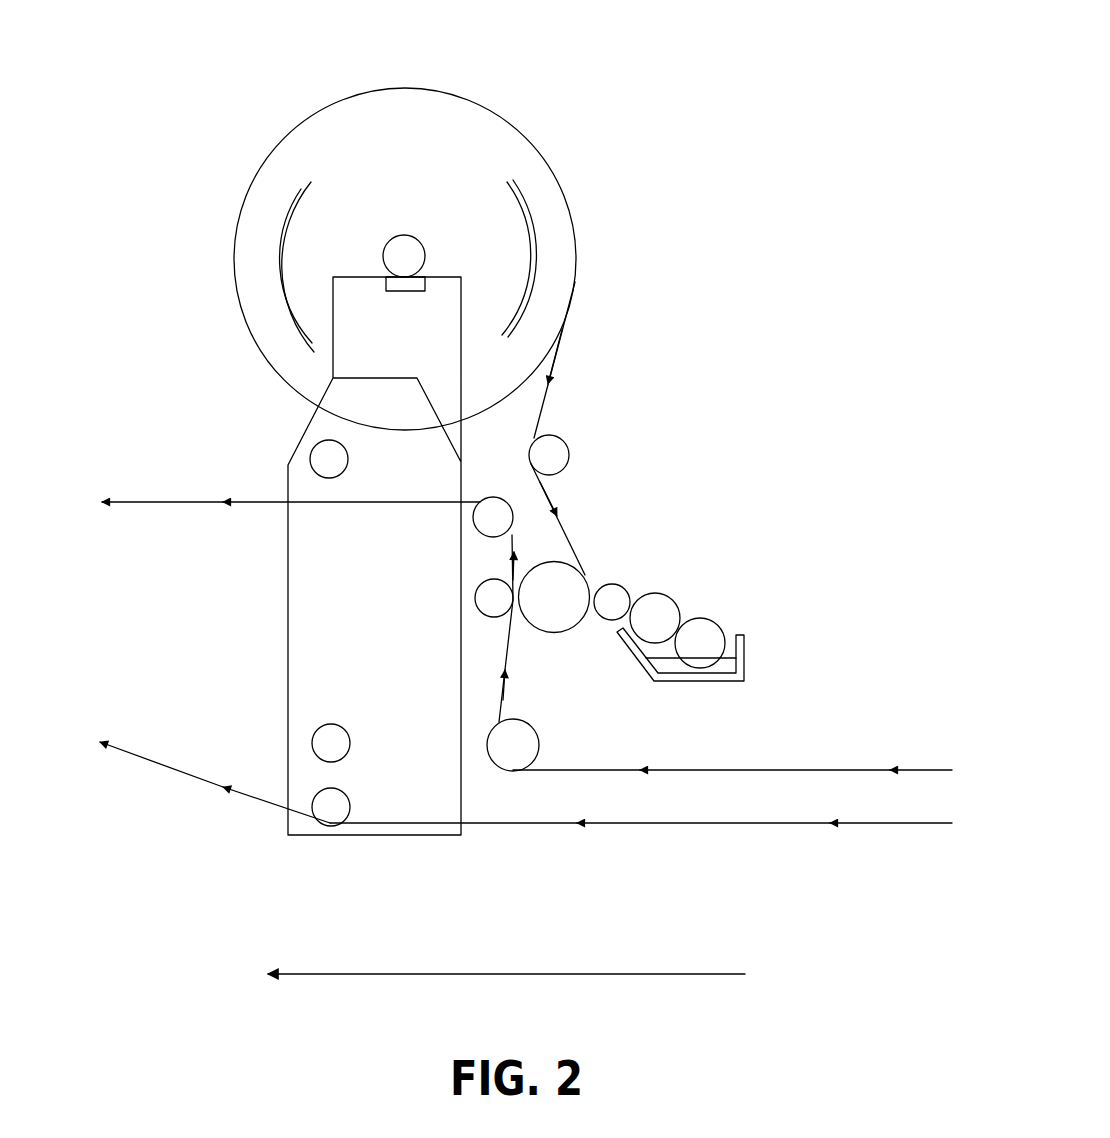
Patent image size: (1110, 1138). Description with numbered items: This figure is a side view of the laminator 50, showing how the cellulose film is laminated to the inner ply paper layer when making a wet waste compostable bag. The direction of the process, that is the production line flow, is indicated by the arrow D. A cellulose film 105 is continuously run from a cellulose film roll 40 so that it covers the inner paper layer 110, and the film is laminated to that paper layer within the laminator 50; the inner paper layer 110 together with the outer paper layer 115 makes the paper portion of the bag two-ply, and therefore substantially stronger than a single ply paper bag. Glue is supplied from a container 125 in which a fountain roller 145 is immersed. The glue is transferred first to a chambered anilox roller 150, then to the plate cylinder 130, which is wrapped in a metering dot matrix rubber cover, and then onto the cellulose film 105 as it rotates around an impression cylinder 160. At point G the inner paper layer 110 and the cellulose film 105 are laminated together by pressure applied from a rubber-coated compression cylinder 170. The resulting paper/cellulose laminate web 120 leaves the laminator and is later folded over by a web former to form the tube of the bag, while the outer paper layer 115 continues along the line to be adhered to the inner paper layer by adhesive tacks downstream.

The cellulose film roll 40 is at (383, 86).
The laminator 50 is at (392, 837).
The cellulose film 105 is at (545, 398).
The inner paper layer 110 is at (607, 769).
The outer paper layer 115 is at (757, 822).
The paper/cellulose laminate web 120 is at (178, 500).
The container 125 is at (745, 663).
The plate cylinder 130 is at (615, 583).
The fountain roller 145 is at (703, 618).
The chambered anilox roller 150 is at (662, 595).
The impression cylinder 160 is at (587, 560).
The rubber-coated compression cylinder 170 is at (478, 590).
The lamination point G is at (519, 620).
The process direction arrow D is at (506, 957).